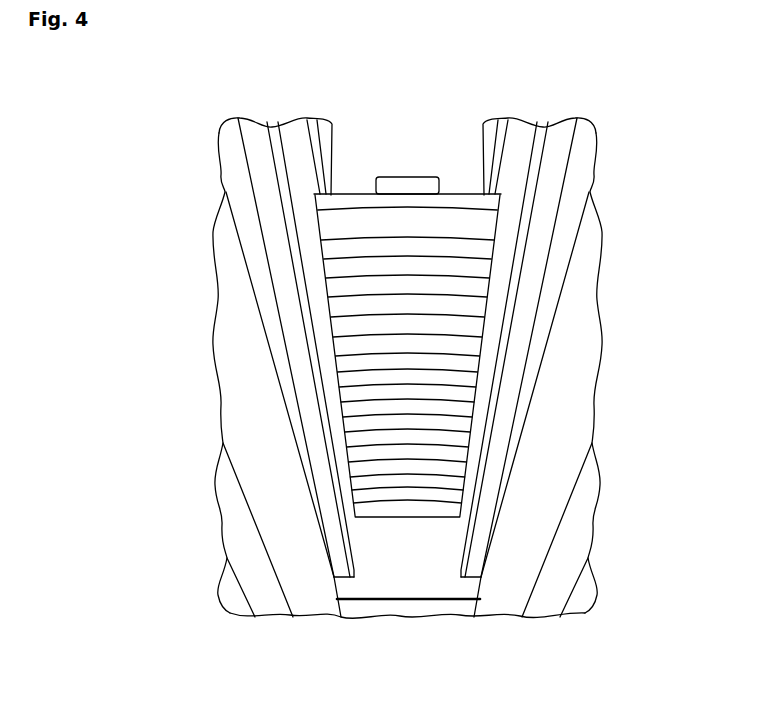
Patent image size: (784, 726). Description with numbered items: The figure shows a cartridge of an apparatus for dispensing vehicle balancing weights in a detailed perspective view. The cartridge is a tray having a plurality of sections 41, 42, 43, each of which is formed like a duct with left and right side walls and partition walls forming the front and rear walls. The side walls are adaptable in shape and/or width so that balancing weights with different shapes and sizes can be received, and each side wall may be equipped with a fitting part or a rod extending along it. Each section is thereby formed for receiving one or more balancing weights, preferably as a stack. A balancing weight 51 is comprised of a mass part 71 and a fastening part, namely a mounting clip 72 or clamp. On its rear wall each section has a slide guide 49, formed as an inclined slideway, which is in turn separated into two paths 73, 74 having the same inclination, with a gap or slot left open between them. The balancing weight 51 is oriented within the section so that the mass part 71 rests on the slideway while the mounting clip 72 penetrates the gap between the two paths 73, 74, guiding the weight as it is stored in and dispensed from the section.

The section 41 is at (470, 590).
The section 42 is at (363, 538).
The section 43 is at (506, 130).
The slide guide 49 is at (336, 540).
The balancing weight 51 is at (366, 163).
The mass part 71 is at (484, 229).
The mounting clip 72 is at (407, 184).
The path 73 is at (316, 149).
The path 74 is at (500, 148).